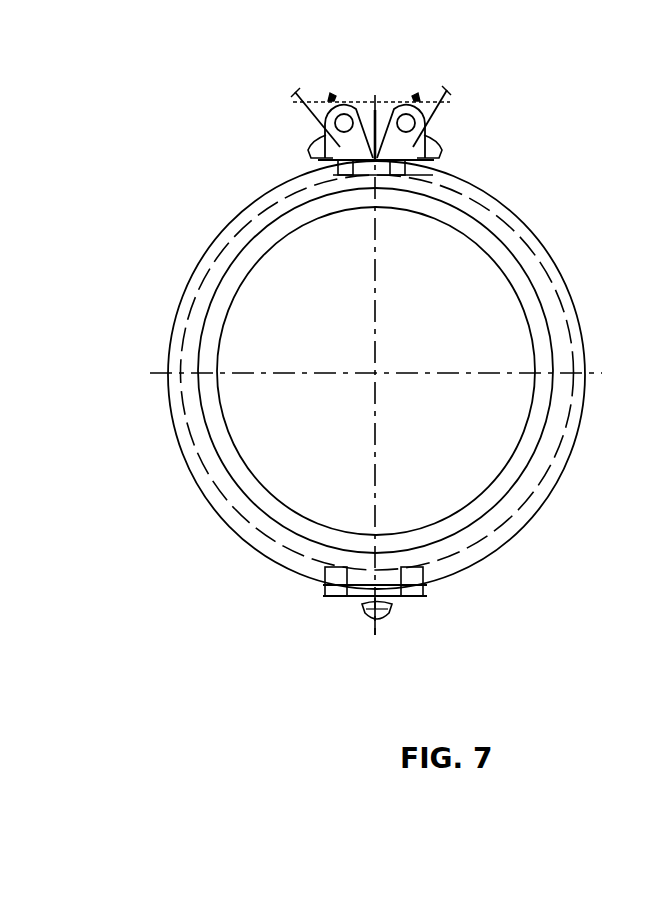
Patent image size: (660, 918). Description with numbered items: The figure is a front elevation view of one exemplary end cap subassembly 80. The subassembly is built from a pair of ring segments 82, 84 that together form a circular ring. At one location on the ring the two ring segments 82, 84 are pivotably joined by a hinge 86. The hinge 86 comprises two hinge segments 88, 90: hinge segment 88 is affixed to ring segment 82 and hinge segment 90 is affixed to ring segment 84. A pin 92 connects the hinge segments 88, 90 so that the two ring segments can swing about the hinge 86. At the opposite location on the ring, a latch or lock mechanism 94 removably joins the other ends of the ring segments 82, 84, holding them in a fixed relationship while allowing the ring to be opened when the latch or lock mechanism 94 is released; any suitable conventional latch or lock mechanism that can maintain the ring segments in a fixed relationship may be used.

The end cap subassembly 80 is at (588, 296).
The ring segment 82 is at (568, 466).
The ring segment 84 is at (168, 343).
The hinge 86 is at (396, 631).
The hinge segment 88 is at (401, 605).
The hinge segment 90 is at (352, 604).
The pin 92 is at (367, 607).
The latch or lock mechanism 94 is at (456, 110).